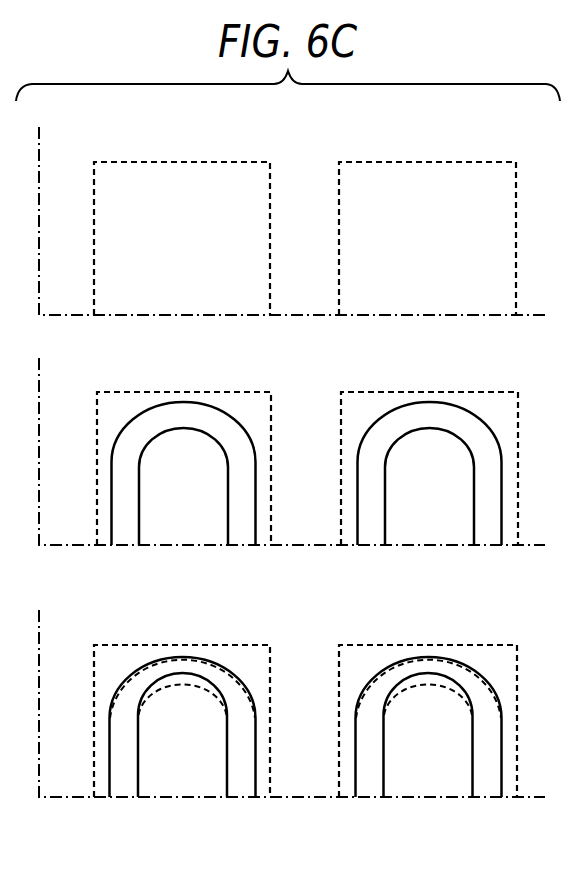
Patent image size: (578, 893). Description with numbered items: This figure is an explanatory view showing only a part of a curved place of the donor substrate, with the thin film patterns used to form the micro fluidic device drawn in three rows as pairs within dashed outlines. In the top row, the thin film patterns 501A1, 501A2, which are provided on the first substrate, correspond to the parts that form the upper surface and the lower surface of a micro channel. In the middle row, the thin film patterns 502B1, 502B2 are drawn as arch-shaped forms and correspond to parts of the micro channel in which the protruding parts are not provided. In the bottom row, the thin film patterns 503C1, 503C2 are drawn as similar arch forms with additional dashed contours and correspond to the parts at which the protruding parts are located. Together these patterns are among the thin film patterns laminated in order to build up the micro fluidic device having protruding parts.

The thin film pattern 501A1 is at (172, 181).
The thin film pattern 501A2 is at (416, 181).
The thin film pattern 502B1 is at (163, 402).
The thin film pattern 502B2 is at (408, 401).
The thin film pattern 503C1 is at (170, 653).
The thin film pattern 503C2 is at (407, 653).